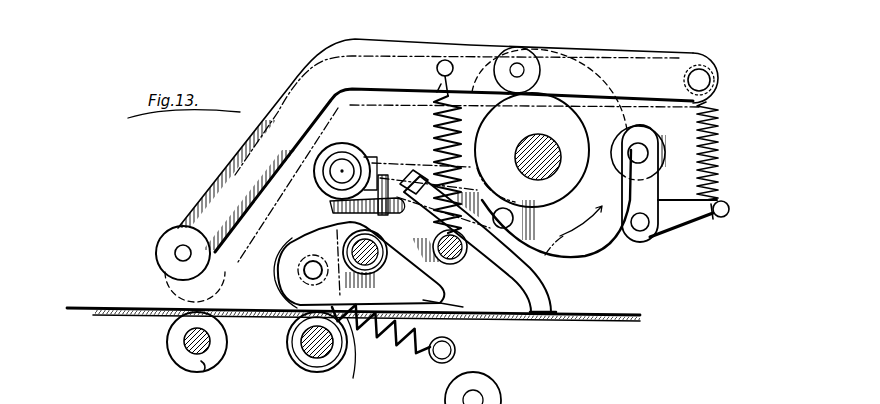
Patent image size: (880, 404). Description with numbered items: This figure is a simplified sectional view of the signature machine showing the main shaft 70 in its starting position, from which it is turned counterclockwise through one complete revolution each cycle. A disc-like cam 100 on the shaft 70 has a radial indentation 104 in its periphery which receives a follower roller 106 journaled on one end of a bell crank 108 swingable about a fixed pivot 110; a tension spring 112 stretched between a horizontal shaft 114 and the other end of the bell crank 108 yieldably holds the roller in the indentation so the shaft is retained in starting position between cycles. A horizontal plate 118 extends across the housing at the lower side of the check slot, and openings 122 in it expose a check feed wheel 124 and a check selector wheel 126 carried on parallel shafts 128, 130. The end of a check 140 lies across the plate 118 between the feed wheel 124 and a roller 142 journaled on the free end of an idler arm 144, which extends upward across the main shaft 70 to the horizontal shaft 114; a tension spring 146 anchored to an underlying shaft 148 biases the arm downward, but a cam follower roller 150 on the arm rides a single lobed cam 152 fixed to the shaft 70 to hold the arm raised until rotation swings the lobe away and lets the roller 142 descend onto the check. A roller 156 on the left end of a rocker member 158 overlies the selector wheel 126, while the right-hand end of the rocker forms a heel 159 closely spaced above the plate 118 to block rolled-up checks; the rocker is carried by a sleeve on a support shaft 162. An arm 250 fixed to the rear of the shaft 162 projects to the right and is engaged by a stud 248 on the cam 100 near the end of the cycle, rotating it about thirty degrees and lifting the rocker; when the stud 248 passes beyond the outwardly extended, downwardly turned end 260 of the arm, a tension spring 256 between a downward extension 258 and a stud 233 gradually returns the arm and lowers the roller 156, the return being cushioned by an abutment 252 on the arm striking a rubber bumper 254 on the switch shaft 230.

The main shaft 70 is at (516, 159).
The disc-like cam 100 is at (590, 252).
The radial indentation 104 is at (603, 162).
The follower roller 106 is at (647, 142).
The bell crank 108 is at (650, 203).
The fixed pivot 110 is at (640, 231).
The tension spring 112 is at (716, 132).
The horizontal shaft 114 is at (712, 92).
The horizontal plate 118 is at (117, 320).
The openings 122 is at (190, 317).
The check feed wheel 124 is at (197, 372).
The check selector wheel 126 is at (317, 370).
The shaft 128 is at (195, 355).
The shaft 130 is at (305, 345).
The check 140 is at (80, 307).
The roller 142 is at (178, 230).
The idler arm 144 is at (256, 126).
The tension spring 146 is at (436, 124).
The shaft 148 is at (460, 268).
The cam follower roller 150 is at (527, 52).
The single lobed cam 152 is at (547, 127).
The roller 156 is at (279, 297).
The rocker member 158 is at (412, 294).
The heel 159 is at (457, 309).
The support shaft 162 is at (355, 245).
The switch shaft 230 is at (330, 168).
The stud 233 is at (455, 351).
The stud 248 is at (455, 260).
The arm 250 is at (428, 163).
The abutment 252 is at (373, 163).
The rubber bumper 254 is at (338, 177).
The tension spring 256 is at (303, 268).
The downward extension 258 is at (358, 385).
The turned-down end 260 is at (560, 307).